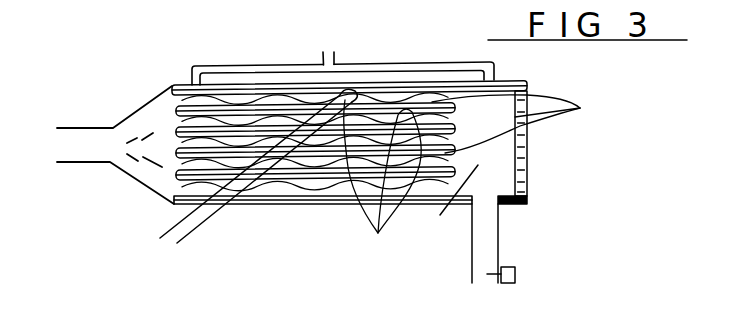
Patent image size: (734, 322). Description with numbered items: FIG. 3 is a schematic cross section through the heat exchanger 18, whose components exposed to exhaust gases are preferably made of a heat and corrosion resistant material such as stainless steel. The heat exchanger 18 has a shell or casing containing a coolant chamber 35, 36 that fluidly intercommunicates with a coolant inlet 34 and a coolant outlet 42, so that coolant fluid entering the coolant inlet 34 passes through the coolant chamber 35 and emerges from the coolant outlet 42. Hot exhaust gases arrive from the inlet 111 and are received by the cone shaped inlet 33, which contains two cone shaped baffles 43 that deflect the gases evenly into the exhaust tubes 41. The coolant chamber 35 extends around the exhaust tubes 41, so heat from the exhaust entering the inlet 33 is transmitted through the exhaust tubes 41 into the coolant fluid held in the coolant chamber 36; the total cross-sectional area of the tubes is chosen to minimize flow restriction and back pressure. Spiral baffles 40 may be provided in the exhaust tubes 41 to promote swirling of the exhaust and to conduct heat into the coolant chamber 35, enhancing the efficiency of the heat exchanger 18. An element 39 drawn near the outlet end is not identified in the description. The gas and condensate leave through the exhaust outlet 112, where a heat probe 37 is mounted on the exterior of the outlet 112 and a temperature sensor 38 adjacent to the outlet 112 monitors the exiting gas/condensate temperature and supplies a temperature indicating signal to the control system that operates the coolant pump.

The heat exchanger 18 is at (315, 205).
The inlet 33 is at (153, 98).
The coolant inlet 34 is at (275, 64).
The coolant chamber 35 is at (525, 121).
The coolant chamber 36 is at (533, 170).
The heat probe 37 is at (515, 273).
The temperature sensor 38 is at (472, 281).
The baffle 39 is at (440, 215).
The spiral baffles 40 is at (378, 233).
The exhaust tubes 41 is at (280, 204).
The coolant outlet 42 is at (189, 238).
The cone shaped baffles 43 is at (145, 160).
The inlet 111 is at (83, 163).
The exhaust outlet 112 is at (498, 244).